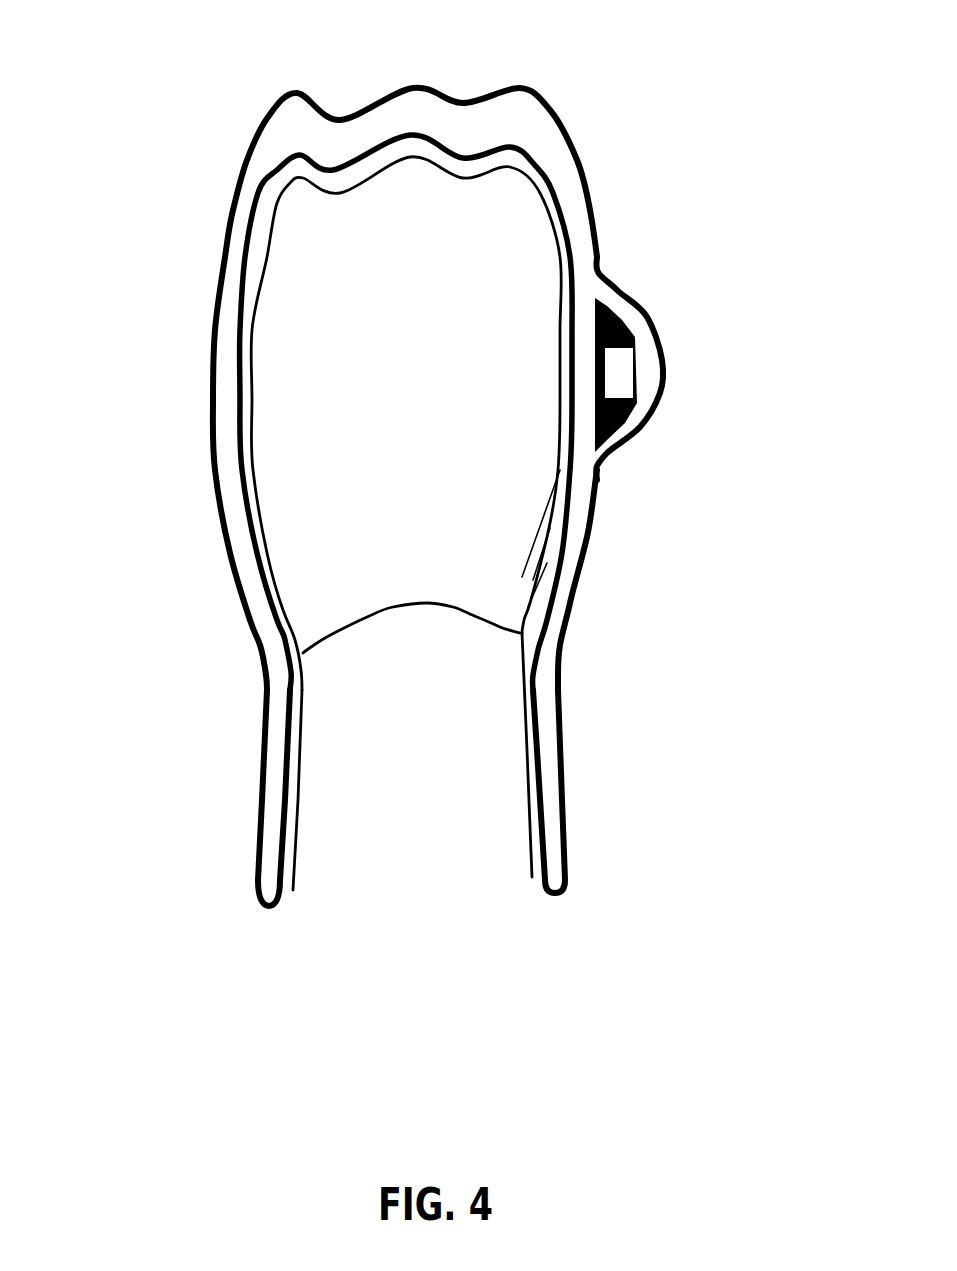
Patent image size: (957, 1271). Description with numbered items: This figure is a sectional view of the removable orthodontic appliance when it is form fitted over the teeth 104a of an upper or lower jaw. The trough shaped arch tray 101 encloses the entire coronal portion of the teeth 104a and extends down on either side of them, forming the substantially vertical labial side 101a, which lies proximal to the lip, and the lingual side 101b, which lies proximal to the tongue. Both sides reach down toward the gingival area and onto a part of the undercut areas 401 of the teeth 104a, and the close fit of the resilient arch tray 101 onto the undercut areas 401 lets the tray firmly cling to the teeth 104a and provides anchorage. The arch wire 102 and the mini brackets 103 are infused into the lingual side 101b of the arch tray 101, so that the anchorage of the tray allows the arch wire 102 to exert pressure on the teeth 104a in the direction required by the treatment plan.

The arch tray 101 is at (587, 137).
The labial side 101a is at (245, 798).
The lingual side 101b is at (580, 806).
The arch wire 102 is at (634, 366).
The mini brackets 103 is at (625, 307).
The teeth 104a is at (284, 170).
The undercut areas 401 is at (546, 600).